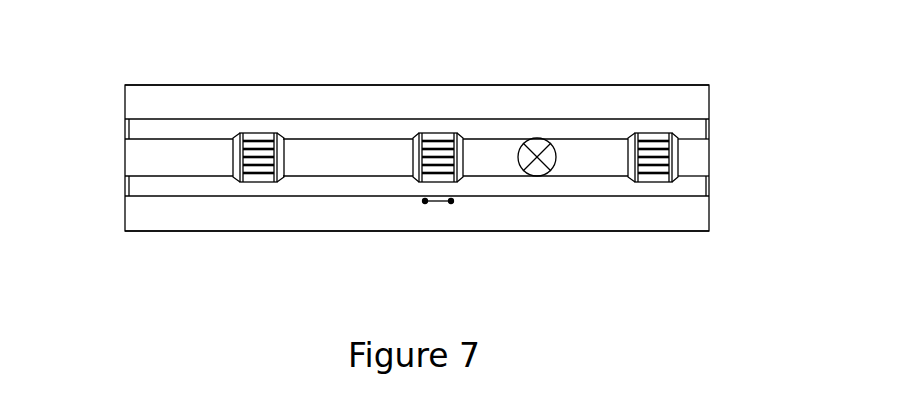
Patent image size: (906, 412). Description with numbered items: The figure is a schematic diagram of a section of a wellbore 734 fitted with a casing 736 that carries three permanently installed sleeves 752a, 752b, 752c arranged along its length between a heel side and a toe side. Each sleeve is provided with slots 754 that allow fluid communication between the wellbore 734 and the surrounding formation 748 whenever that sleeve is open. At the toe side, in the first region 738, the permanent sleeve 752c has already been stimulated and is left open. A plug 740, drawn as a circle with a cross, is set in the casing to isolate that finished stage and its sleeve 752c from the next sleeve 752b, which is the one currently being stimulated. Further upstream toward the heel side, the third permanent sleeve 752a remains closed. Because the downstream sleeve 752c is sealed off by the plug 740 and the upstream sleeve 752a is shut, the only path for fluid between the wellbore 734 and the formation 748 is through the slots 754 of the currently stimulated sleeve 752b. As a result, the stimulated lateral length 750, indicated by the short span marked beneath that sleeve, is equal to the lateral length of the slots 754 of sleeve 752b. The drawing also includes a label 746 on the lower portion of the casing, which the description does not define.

The wellbore 734 is at (106, 183).
The casing 736 is at (180, 138).
The first region 738 is at (603, 138).
The plug 740 is at (537, 168).
The lower body portion 746 is at (315, 183).
The formation 748 is at (391, 105).
The stimulated lateral length 750 is at (437, 203).
The third permanent sleeve 752a is at (283, 138).
The sleeve 752b is at (460, 137).
The permanent sleeve 752c is at (674, 138).
The slots 754 is at (465, 172).